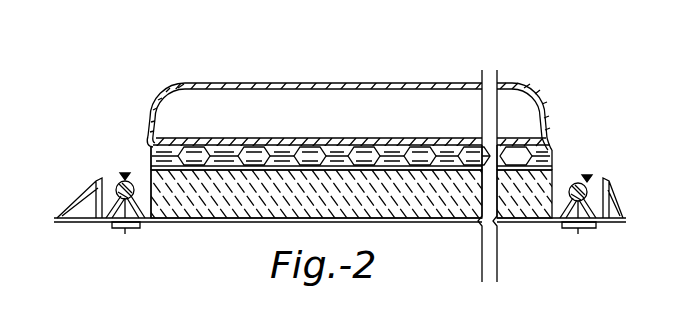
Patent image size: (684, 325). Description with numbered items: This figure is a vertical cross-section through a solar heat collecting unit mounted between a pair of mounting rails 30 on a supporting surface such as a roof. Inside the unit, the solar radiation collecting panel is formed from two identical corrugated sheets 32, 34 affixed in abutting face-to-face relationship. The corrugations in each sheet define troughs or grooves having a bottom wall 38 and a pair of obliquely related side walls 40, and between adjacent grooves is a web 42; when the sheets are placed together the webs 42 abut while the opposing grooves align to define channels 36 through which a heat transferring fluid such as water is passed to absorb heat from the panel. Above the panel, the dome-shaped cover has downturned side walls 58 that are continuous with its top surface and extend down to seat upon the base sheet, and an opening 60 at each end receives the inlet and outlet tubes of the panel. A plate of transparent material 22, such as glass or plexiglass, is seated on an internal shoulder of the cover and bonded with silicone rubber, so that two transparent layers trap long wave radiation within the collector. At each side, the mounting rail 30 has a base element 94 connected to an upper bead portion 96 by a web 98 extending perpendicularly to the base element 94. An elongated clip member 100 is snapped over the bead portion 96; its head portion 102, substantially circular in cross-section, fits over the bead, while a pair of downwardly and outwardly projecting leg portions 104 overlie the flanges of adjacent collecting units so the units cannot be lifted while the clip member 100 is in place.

The plate of transparent material 22 is at (455, 140).
The mounting rails 30 is at (112, 181).
The corrugated sheet 32 is at (150, 140).
The corrugated sheet 34 is at (148, 168).
The channels 36 is at (248, 146).
The bottom wall 38 is at (333, 150).
The side walls 40 is at (288, 150).
The web 42 is at (425, 150).
The downturned side walls 58 is at (166, 96).
The opening 60 is at (178, 138).
The base element 94 is at (120, 229).
The bead portion 96 is at (142, 228).
The web 98 is at (100, 219).
The clip member 100 is at (122, 173).
The head portion 102 is at (604, 192).
The leg portions 104 is at (96, 188).